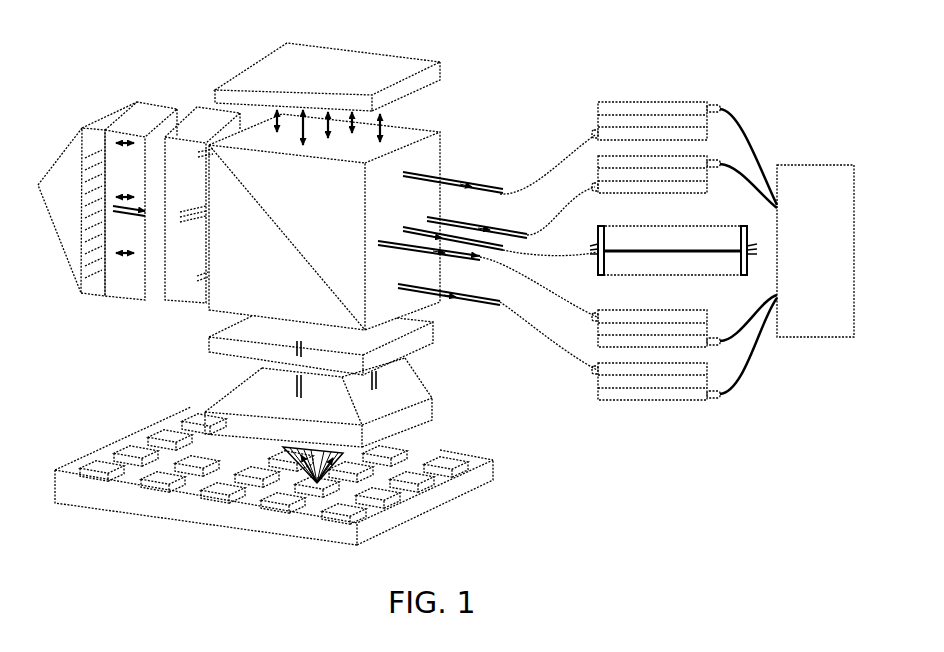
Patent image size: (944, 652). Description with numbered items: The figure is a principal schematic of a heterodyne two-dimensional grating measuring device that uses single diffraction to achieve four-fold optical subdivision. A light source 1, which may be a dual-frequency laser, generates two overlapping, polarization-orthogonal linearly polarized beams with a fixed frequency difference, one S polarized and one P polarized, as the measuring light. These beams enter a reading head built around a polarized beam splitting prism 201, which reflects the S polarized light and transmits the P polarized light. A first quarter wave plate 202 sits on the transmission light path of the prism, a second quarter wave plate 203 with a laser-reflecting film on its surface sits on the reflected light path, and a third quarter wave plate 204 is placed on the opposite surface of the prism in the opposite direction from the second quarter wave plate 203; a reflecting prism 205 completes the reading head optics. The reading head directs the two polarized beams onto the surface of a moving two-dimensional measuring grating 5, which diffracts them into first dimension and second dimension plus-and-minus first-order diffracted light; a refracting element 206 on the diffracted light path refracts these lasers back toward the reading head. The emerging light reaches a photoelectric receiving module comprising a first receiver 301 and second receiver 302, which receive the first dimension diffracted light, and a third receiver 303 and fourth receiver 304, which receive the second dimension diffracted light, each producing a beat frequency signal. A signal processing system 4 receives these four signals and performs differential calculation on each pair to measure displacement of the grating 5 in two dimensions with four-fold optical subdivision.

The light source 1 is at (697, 252).
The signal processing system 4 is at (792, 338).
The two-dimensional measuring grating 5 is at (153, 420).
The polarized beam splitting prism 201 is at (442, 152).
The first quarter wave plate 202 is at (203, 125).
The second quarter wave plate 203 is at (240, 92).
The third quarter wave plate 204 is at (227, 333).
The reflecting prism 205 is at (140, 113).
The refracting element 206 is at (237, 393).
The first receiver 301 is at (598, 103).
The second receiver 302 is at (598, 397).
The third receiver 303 is at (598, 347).
The fourth receiver 304 is at (598, 155).